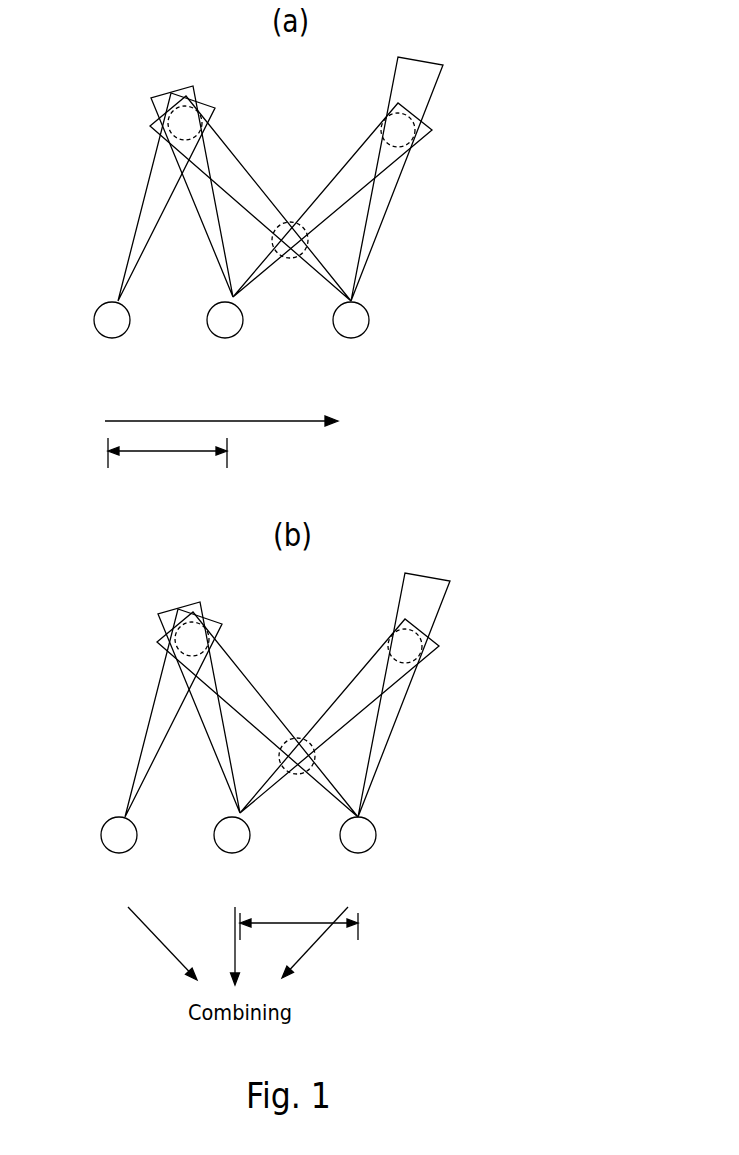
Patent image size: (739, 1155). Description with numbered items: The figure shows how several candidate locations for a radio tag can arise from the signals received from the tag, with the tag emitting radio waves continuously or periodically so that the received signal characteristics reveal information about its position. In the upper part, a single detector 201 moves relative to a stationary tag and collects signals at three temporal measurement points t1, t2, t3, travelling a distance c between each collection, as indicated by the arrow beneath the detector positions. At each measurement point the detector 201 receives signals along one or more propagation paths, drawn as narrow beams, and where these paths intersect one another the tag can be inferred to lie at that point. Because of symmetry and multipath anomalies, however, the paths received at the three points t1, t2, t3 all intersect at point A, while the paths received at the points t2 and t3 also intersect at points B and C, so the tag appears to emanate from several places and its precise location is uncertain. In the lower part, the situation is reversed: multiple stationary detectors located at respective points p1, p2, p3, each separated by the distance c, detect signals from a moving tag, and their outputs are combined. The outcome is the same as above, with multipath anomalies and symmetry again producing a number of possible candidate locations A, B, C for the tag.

The detector 201 is at (384, 336).
The intersection point A is at (188, 381).
The intersection point B is at (293, 480).
The intersection point C is at (401, 389).
The first temporal measurement point t1 is at (112, 336).
The second temporal measurement point t2 is at (225, 336).
The third temporal measurement point t3 is at (351, 336).
The first detector point p1 is at (119, 849).
The second detector point p2 is at (235, 849).
The third detector point p3 is at (361, 849).
The distance c is at (233, 689).